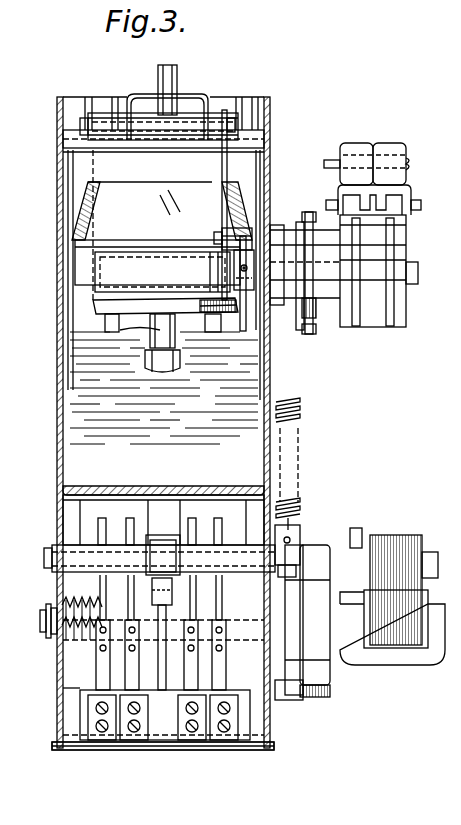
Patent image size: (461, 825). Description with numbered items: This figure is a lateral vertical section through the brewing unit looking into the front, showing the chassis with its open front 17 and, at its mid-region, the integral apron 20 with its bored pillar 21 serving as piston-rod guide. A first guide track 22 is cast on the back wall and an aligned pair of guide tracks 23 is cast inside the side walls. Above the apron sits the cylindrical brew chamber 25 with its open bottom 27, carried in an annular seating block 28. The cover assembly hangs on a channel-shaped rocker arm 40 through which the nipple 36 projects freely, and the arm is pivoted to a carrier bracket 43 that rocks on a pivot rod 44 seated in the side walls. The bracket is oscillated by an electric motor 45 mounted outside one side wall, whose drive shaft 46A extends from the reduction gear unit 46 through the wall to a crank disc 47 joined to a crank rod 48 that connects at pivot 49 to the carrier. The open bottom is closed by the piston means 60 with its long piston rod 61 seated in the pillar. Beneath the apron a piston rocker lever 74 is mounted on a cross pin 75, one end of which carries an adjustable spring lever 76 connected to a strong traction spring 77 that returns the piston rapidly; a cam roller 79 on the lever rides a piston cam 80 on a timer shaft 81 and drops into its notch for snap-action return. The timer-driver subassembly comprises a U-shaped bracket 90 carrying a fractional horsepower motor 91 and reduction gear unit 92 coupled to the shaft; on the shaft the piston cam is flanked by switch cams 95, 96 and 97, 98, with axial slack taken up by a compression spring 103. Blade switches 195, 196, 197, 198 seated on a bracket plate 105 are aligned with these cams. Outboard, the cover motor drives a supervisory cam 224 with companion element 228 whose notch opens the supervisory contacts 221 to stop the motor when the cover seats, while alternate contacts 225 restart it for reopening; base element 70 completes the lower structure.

The open front 17 is at (110, 445).
The apron 20 is at (210, 421).
The pillar 21 is at (148, 368).
The first guide track 22 is at (176, 492).
The guide tracks 23 is at (68, 520).
The brew chamber 25 is at (105, 264).
The open bottom 27 is at (100, 292).
The seating block 28 is at (165, 225).
The nipple 36 is at (178, 72).
The rocker arm 40 is at (198, 110).
The carrier bracket 43 is at (146, 94).
The pivot rod 44 is at (92, 150).
The electric motor 45 is at (407, 254).
The reduction gear unit 46 is at (312, 326).
The drive shaft 46A is at (298, 300).
The crank disc 47 is at (243, 332).
The crank rod 48 is at (222, 180).
The pivotal connection 49 is at (228, 110).
The piston means 60 is at (125, 330).
The piston rod 61 is at (150, 348).
The base 70 is at (66, 700).
The piston rocker lever 74 is at (164, 538).
The cross pin 75 is at (44, 556).
The spring lever 76 is at (300, 548).
The traction spring 77 is at (300, 516).
The cam roller 79 is at (165, 572).
The piston cam 80 is at (158, 688).
The timer shaft 81 is at (42, 636).
The U-shaped bracket 90 is at (258, 750).
The fractional horsepower motor 91 is at (396, 658).
The reduction gear unit 92 is at (322, 672).
The switch cam 95 is at (104, 518).
The switch cam 96 is at (133, 512).
The cover cam 97 is at (194, 518).
The switch cam 98 is at (228, 514).
The compression spring 103 is at (74, 602).
The bracket plate 105 is at (160, 730).
The blade switch 195 is at (100, 672).
The blade switch 196 is at (130, 690).
The cover-cam contacts 197 is at (190, 690).
The blade switch 198 is at (218, 672).
The cover supervisory switch contacts 221 is at (356, 142).
The supervisory cover switch cam 224 is at (356, 326).
The alternate contacts 225 is at (390, 142).
The cover supervisory unit element 228 is at (390, 326).